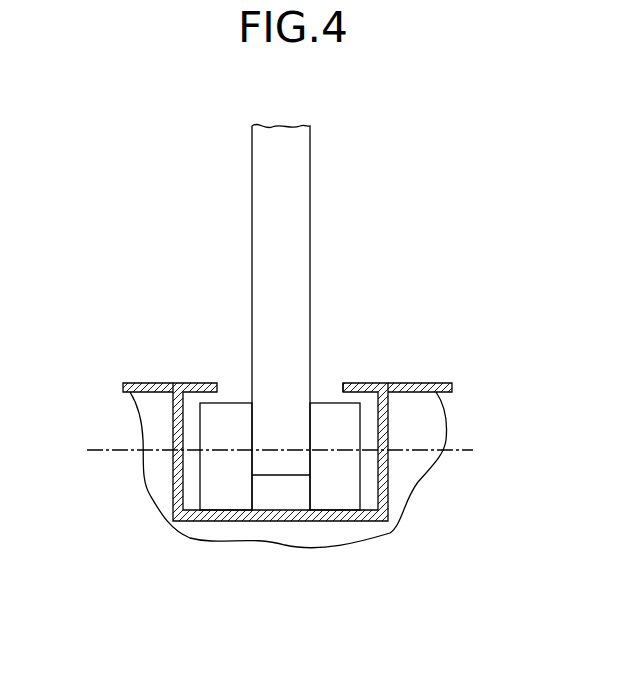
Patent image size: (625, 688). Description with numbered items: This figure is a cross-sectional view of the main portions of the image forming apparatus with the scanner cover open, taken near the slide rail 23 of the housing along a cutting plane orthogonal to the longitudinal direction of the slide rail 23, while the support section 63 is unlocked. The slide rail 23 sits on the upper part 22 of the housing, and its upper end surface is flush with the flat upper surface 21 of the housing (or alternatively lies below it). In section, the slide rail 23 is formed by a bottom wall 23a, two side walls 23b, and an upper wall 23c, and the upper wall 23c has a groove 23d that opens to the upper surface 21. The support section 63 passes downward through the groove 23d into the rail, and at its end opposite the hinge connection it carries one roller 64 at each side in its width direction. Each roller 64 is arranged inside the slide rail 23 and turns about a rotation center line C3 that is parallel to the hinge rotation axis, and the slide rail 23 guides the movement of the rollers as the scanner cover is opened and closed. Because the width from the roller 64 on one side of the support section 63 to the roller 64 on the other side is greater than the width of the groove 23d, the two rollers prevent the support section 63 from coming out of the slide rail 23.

The upper surface 21 is at (430, 383).
The upper part 22 is at (428, 394).
The slide rail 23 is at (283, 461).
The bottom wall 23a is at (285, 516).
The side walls 23b is at (172, 478).
The upper wall 23c is at (199, 383).
The groove 23d is at (343, 387).
The support section 63 is at (295, 236).
The roller 64 is at (226, 500).
The rotation center line C3 is at (100, 449).